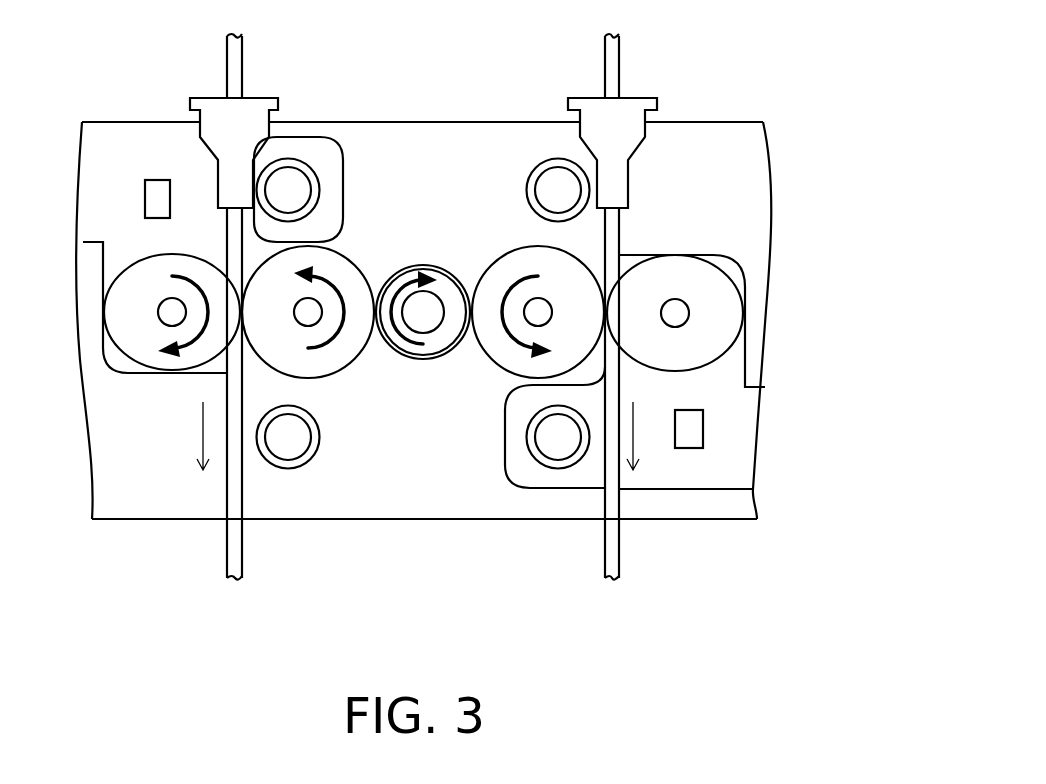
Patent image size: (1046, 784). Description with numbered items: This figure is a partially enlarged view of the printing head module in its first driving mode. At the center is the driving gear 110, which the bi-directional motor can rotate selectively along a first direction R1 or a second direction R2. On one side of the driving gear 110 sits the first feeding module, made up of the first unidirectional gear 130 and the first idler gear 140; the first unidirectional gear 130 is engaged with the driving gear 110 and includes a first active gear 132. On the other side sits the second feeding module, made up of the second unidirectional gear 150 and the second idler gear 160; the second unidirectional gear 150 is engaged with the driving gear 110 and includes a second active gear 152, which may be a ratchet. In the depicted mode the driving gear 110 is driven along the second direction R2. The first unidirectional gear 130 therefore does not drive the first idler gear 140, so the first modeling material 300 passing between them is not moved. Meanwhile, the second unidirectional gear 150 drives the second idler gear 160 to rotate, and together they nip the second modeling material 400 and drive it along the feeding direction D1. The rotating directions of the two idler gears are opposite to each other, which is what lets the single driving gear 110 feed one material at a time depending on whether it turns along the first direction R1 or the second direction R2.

The driving gear 110 is at (425, 275).
The first unidirectional gear 130 is at (538, 195).
The first active gear 132 is at (500, 278).
The second unidirectional gear 150 is at (316, 196).
The second active gear 152 is at (348, 280).
The first idler gear 140 is at (682, 273).
The second idler gear 160 is at (145, 275).
The first modeling material 300 is at (612, 543).
The second modeling material 400 is at (235, 547).
The first direction R1 is at (412, 342).
The second direction R2 is at (333, 343).
The feeding direction D1 is at (416, 436).